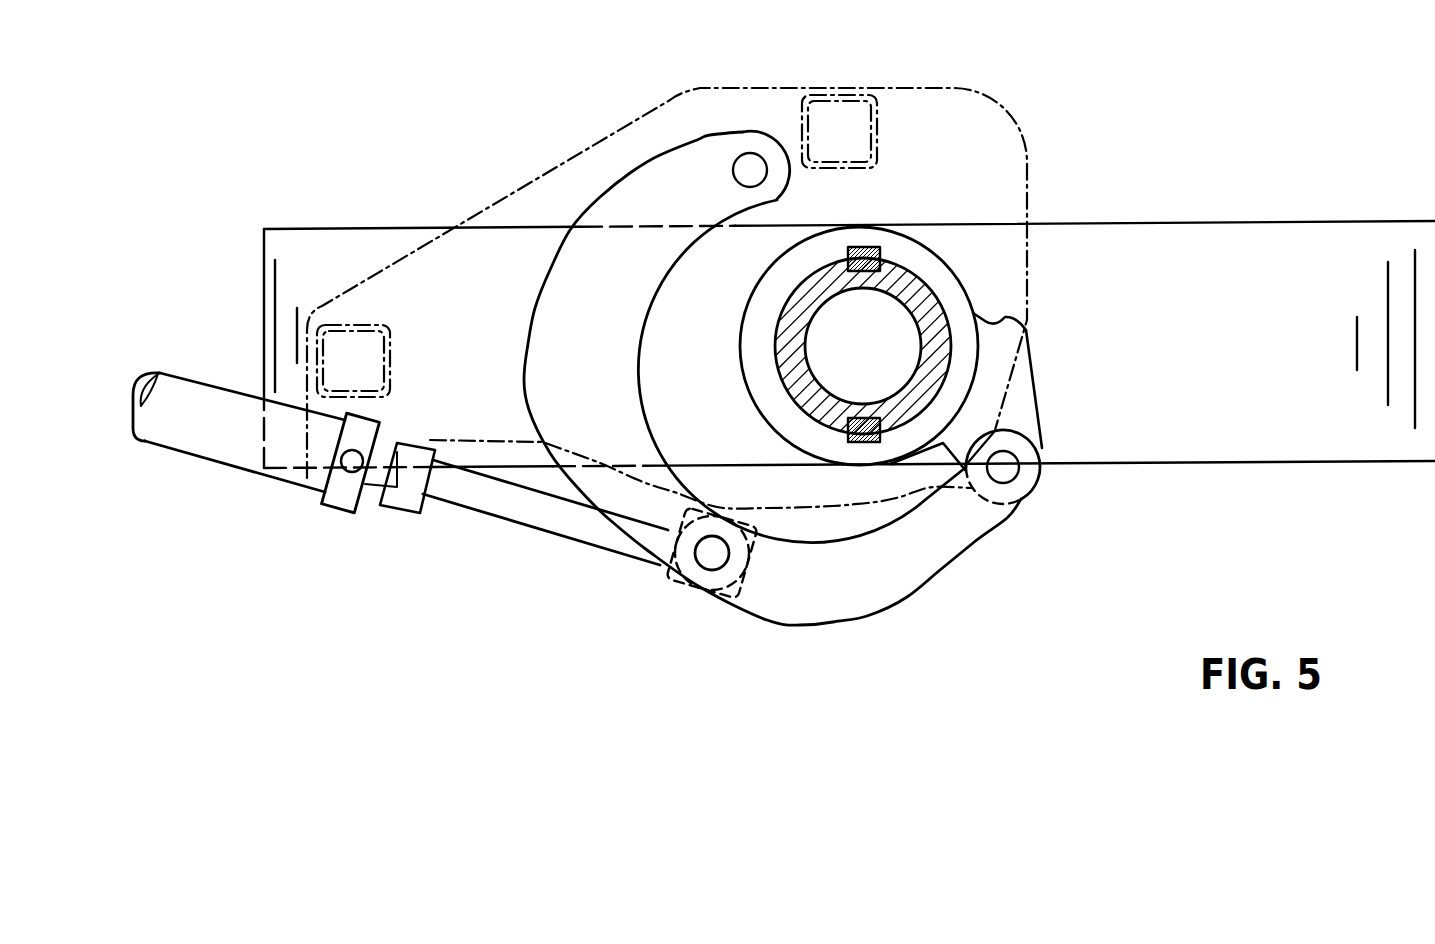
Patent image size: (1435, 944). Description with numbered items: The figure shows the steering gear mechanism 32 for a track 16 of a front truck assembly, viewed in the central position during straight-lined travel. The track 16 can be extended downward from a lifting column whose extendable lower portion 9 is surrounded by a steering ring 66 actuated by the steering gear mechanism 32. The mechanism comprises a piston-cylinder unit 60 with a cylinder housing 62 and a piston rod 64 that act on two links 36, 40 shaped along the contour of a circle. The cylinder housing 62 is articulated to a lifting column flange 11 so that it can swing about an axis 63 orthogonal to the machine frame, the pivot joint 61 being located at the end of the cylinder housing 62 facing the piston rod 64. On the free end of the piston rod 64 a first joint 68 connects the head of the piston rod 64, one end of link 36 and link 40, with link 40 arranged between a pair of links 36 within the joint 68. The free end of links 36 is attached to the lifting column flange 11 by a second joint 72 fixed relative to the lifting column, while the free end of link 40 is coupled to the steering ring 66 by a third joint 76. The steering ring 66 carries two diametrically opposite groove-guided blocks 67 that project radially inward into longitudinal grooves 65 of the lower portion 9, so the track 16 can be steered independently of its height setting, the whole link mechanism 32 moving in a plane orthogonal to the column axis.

The extendable portion of lifting column 9 is at (935, 330).
The lifting column flange 11 is at (593, 143).
The track 16 is at (334, 228).
The steering gear mechanism 32 is at (514, 550).
The link 36 is at (530, 358).
The link 40 is at (893, 588).
The piston-cylinder unit 60 is at (239, 416).
The pivot joint 61 is at (317, 497).
The cylinder housing 62 is at (225, 443).
The axis 63 is at (352, 510).
The piston rod 64 is at (533, 513).
The longitudinal grooves 65 is at (877, 300).
The steering ring 66 is at (1030, 412).
The groove-guided blocks 67 is at (870, 258).
The first joint 68 is at (712, 560).
The second joint 72 is at (752, 168).
The third joint 76 is at (1006, 472).